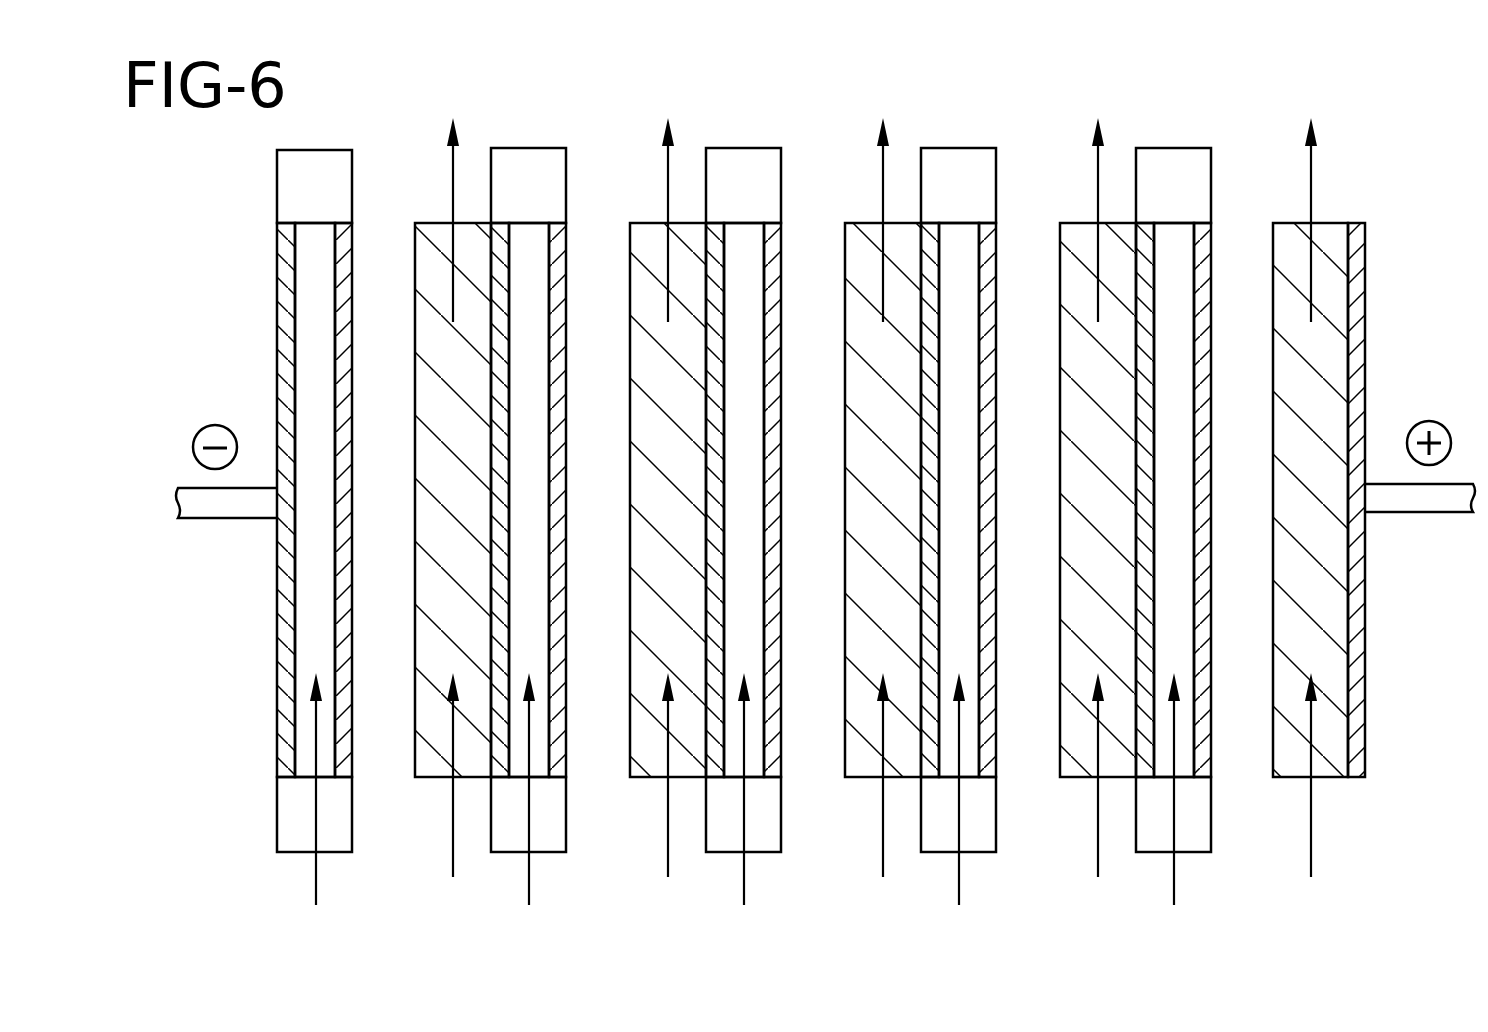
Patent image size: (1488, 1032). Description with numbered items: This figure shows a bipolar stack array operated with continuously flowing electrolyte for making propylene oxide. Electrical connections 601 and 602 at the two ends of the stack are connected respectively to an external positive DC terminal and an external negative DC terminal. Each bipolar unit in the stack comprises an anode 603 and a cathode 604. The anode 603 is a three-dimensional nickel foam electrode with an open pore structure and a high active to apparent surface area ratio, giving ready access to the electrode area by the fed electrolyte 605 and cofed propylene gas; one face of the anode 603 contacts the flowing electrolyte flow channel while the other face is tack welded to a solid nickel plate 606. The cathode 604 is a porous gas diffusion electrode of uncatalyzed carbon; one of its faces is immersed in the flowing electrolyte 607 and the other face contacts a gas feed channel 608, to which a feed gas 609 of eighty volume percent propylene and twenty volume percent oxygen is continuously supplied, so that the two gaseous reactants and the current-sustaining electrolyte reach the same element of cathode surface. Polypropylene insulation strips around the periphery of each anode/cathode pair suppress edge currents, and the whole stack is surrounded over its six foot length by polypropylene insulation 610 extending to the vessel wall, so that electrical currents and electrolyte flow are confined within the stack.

The electrical connection 601 is at (1410, 515).
The electrical connection 602 is at (235, 520).
The anode 603 is at (307, 304).
The cathode 604 is at (352, 223).
The fed electrolyte 605 is at (453, 848).
The solid nickel plate 606 is at (284, 243).
The flowing electrolyte 607 is at (375, 742).
The gas feed channel 608 is at (311, 423).
The propylene/oxygen feed gas 609 is at (316, 878).
The polypropylene insulation 610 is at (237, 702).